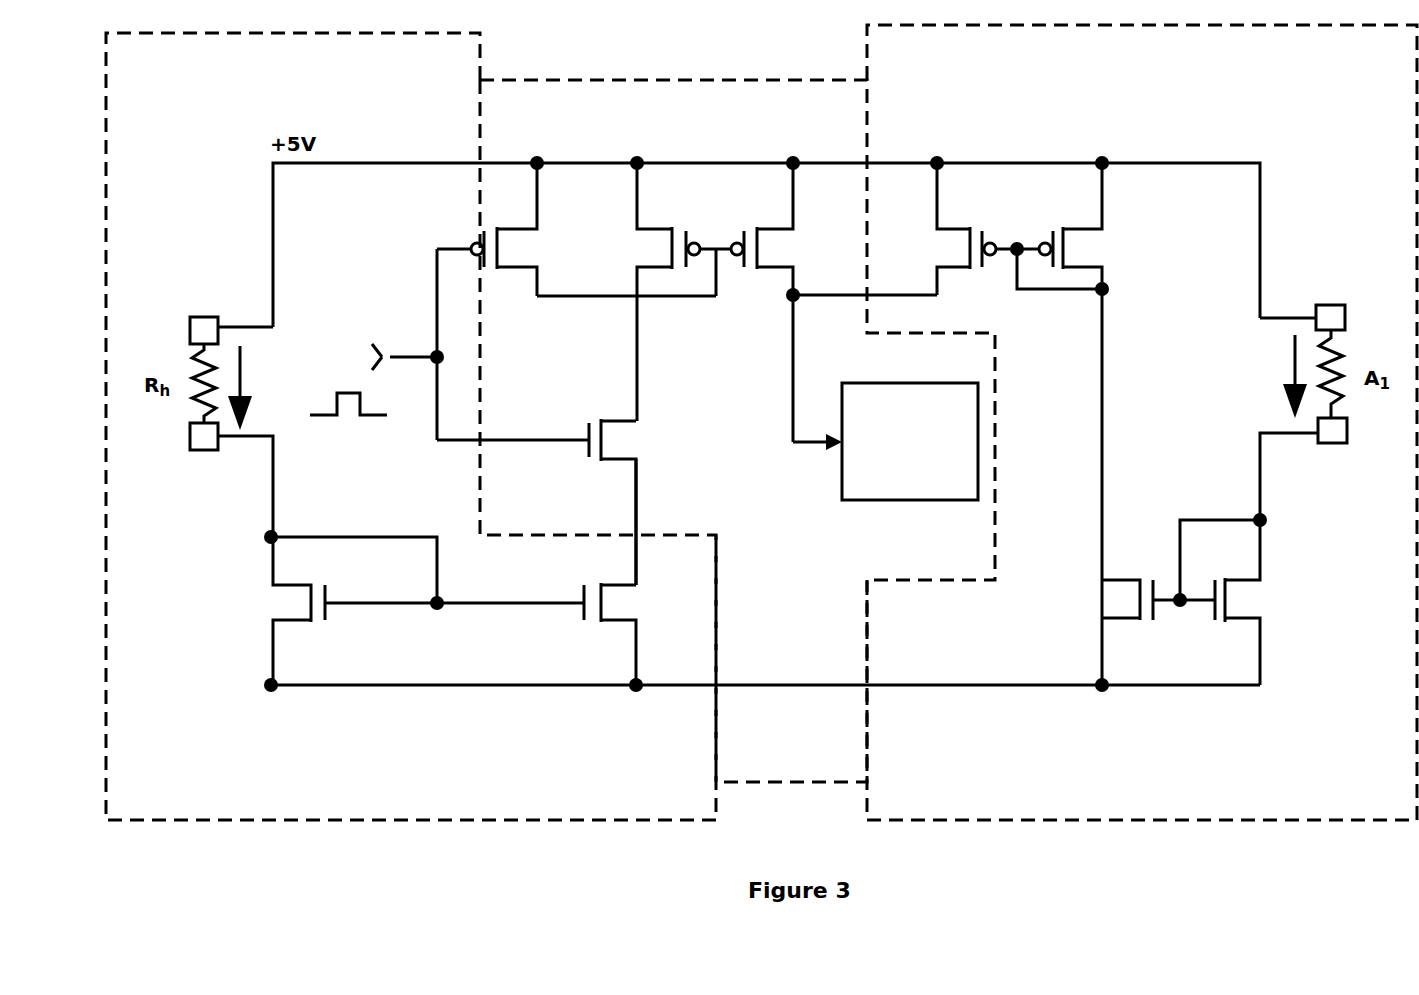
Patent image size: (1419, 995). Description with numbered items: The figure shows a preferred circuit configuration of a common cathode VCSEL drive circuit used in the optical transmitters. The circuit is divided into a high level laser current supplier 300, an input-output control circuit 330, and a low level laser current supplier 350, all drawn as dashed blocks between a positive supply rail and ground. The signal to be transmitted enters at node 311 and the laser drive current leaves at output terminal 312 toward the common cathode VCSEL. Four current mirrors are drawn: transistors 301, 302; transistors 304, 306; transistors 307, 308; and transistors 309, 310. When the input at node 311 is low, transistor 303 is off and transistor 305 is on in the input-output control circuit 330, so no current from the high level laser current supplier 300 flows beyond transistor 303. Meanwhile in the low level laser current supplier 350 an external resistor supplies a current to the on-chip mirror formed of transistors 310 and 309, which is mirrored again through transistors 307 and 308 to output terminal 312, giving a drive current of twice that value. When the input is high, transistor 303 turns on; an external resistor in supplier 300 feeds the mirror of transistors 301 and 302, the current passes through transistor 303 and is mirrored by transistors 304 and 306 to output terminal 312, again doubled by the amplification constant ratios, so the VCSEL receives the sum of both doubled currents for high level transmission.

The high level laser current supplier 300 is at (411, 426).
The input-output control circuit 330 is at (737, 431).
The low level laser current supplier 350 is at (1142, 422).
The transistor 301 is at (282, 610).
The transistor 302 is at (618, 606).
The transistor 303 is at (618, 446).
The transistor 304 is at (655, 246).
The transistor 305 is at (495, 256).
The transistor 306 is at (775, 255).
The transistor 307 is at (970, 246).
The transistor 308 is at (1082, 256).
The transistor 309 is at (1125, 590).
The transistor 310 is at (1240, 606).
The node 311 is at (418, 356).
The output terminal 312 is at (800, 446).